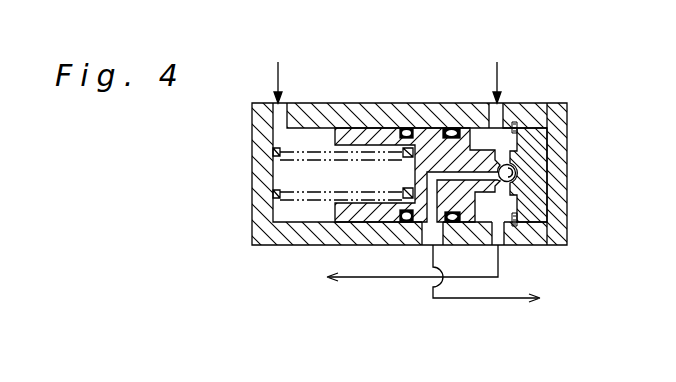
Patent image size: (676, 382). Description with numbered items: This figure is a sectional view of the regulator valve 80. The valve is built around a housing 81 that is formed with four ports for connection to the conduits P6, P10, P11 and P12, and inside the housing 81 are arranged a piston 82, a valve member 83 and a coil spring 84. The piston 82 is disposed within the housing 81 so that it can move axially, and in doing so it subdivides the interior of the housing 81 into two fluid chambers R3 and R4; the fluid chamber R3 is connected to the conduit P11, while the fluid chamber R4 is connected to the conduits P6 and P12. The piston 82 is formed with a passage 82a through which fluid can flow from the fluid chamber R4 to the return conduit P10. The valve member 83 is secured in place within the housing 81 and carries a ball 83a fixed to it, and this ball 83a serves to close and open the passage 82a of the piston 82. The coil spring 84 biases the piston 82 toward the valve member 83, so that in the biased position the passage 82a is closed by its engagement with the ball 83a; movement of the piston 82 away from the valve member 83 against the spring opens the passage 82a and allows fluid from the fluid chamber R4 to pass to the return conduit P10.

The regulator valve 80 is at (555, 92).
The housing 81 is at (558, 113).
The piston 82 is at (367, 133).
The passage 82a is at (450, 175).
The valve member 83 is at (532, 150).
The ball 83a is at (514, 173).
The coil spring 84 is at (273, 197).
The fluid chamber R3 is at (280, 173).
The fluid chamber R4 is at (478, 140).
The conduit P11 is at (276, 70).
The conduit P12 is at (500, 63).
The conduit P6 is at (498, 270).
The return conduit P10 is at (497, 300).